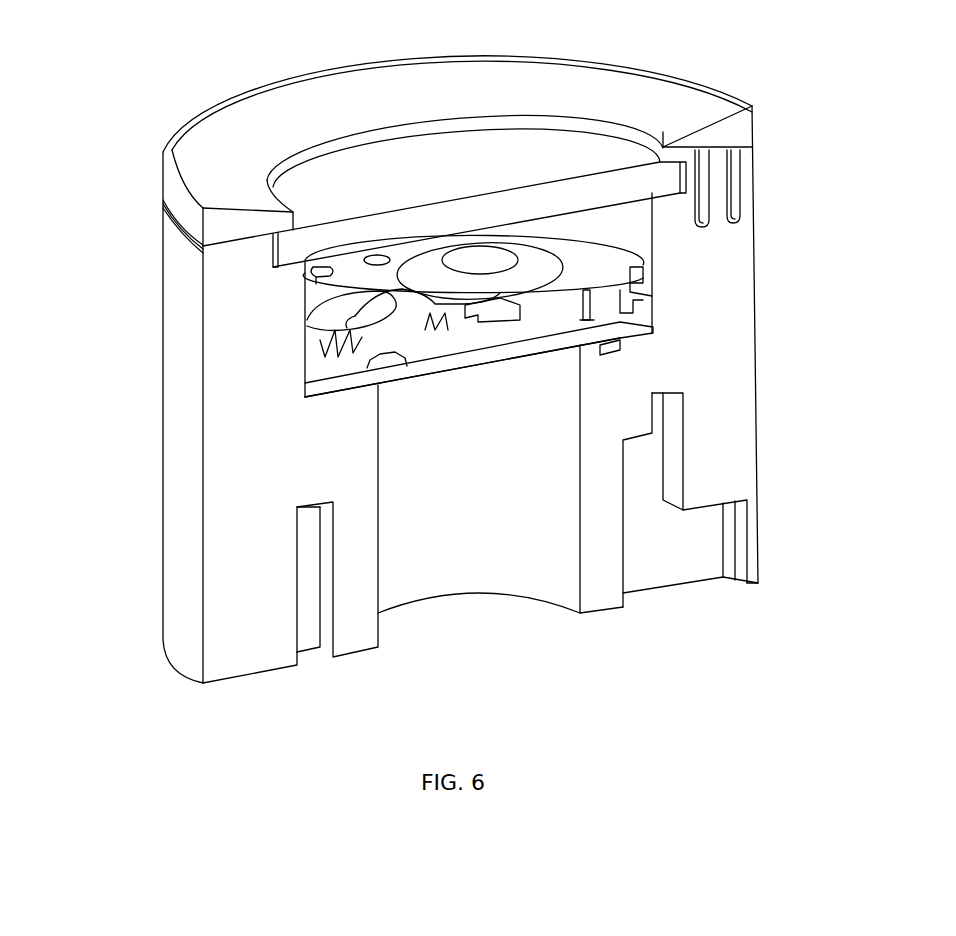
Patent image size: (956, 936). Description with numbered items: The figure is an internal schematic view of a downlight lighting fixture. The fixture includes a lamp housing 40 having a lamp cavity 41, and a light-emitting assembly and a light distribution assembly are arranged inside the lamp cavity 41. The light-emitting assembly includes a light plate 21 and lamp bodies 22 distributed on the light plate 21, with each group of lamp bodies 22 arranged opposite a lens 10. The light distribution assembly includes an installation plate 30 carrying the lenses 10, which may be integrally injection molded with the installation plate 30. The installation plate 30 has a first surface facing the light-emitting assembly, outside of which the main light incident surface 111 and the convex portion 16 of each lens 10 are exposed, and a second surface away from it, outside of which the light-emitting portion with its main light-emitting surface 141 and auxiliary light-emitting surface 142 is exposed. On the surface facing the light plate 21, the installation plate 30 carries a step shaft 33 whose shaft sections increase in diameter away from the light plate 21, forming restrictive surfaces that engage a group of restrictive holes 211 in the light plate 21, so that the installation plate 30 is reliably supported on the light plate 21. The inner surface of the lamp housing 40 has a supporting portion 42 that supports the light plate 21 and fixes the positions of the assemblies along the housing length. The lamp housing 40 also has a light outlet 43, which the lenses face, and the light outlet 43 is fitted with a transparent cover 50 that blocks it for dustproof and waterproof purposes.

The lens 10 is at (390, 310).
The convex portion 16 is at (400, 312).
The light plate 21 is at (440, 352).
The lamp body 22 is at (490, 330).
The installation plate 30 is at (363, 280).
The step shaft 33 is at (603, 301).
The lamp housing 40 is at (713, 450).
The lamp cavity 41 is at (615, 232).
The supporting portion 42 is at (612, 347).
The light outlet 43 is at (415, 130).
The transparent cover 50 is at (507, 167).
The main light incident surface 111 is at (420, 322).
The main light-emitting surface 141 is at (477, 263).
The auxiliary light-emitting surface 142 is at (417, 272).
The restrictive hole 211 is at (605, 335).